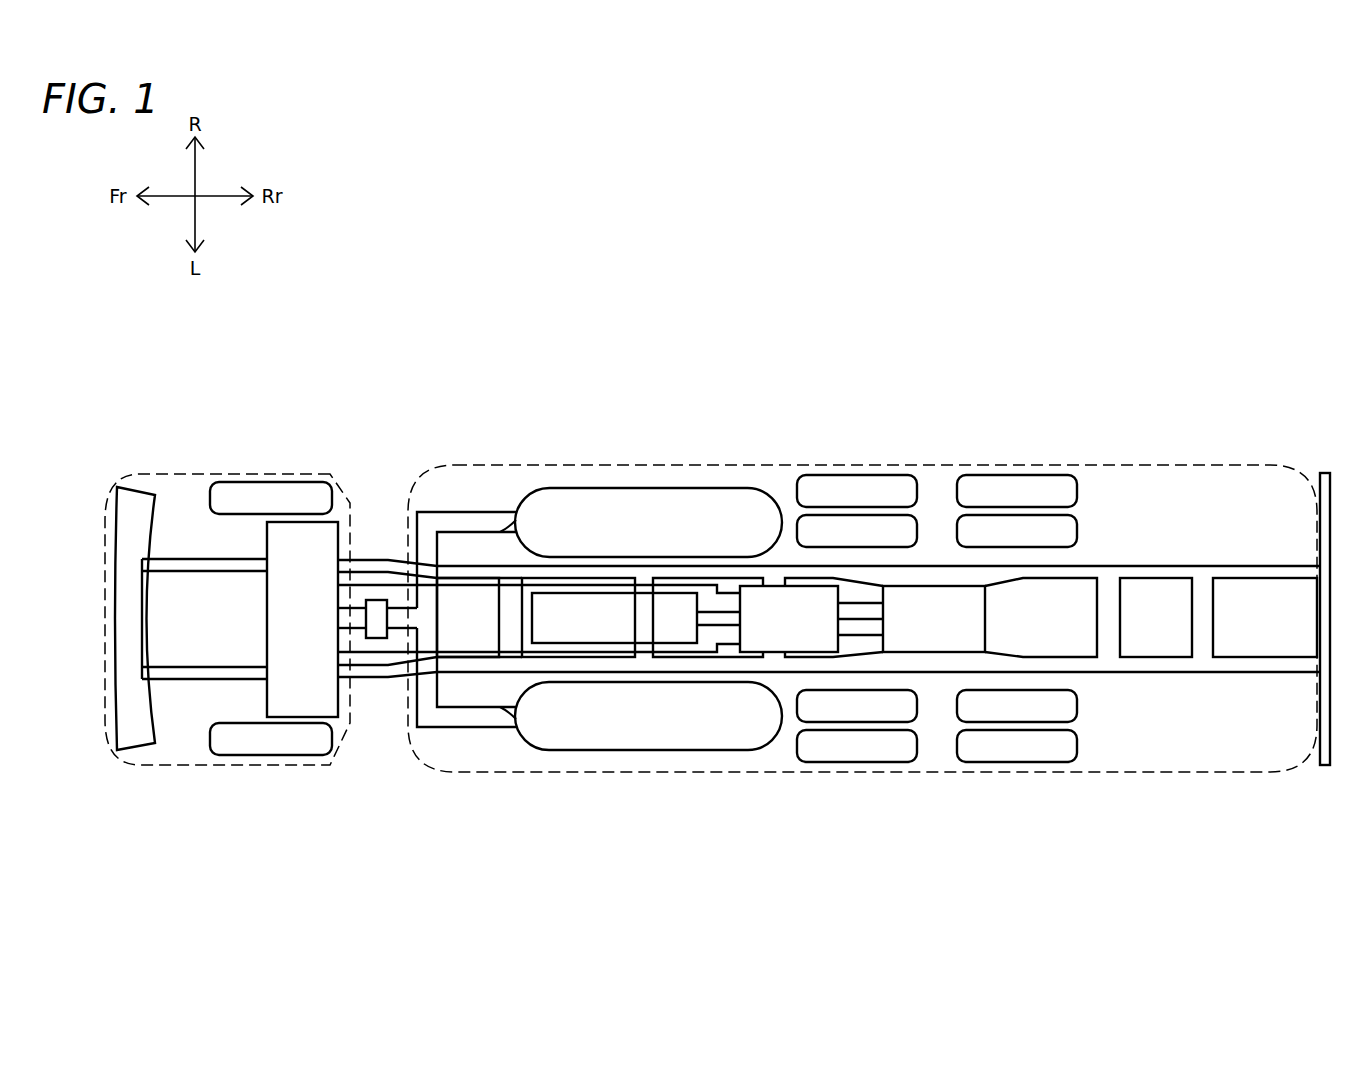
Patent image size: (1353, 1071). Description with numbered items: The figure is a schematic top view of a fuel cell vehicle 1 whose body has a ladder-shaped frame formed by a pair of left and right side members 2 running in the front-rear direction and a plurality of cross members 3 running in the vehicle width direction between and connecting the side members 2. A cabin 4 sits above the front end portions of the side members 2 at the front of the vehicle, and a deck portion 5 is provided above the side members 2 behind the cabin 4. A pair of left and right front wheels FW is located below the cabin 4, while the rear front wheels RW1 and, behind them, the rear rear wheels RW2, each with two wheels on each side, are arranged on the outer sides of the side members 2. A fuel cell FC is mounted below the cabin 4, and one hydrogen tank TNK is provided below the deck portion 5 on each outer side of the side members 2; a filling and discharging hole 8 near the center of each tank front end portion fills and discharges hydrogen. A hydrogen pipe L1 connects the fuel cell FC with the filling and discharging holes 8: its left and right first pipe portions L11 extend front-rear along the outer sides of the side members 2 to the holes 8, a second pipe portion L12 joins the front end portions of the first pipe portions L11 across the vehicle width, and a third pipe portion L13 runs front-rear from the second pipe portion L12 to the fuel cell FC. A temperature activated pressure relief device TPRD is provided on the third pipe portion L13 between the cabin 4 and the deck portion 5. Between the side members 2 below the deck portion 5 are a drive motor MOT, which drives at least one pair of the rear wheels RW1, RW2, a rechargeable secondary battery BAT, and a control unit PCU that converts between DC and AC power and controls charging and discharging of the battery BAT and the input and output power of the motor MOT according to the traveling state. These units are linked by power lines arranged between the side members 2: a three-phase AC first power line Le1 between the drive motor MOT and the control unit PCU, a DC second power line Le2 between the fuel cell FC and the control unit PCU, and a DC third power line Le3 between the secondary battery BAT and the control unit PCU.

The fuel cell vehicle 1 is at (752, 248).
The side members 2 is at (483, 569).
The cross members 3 is at (1107, 593).
The cabin 4 is at (187, 473).
The deck portion 5 is at (1160, 465).
The filling and discharging hole 8 is at (500, 512).
The fuel cell FC is at (302, 619).
The front wheels FW is at (277, 500).
The hydrogen tank TNK is at (648, 619).
The secondary battery BAT is at (609, 617).
The control unit PCU is at (789, 619).
The drive motor MOT is at (934, 619).
The rear front wheels RW1 is at (820, 532).
The rear rear wheels RW2 is at (1011, 532).
The temperature activated pressure relief device TPRD is at (380, 622).
The hydrogen pipe L1 is at (432, 513).
The first pipe portions L11 is at (491, 522).
The second pipe portion L12 is at (428, 549).
The third pipe portion L13 is at (360, 620).
The first power line Le1 is at (873, 635).
The second power line Le2 is at (453, 652).
The third power line Le3 is at (708, 623).